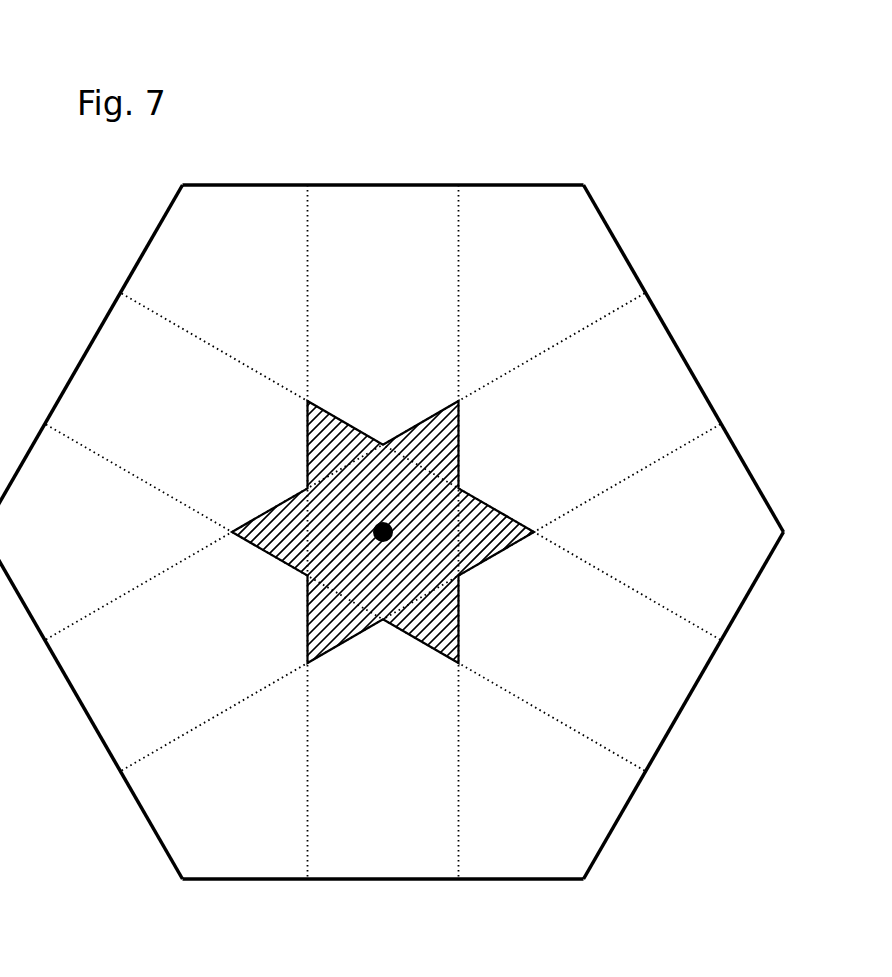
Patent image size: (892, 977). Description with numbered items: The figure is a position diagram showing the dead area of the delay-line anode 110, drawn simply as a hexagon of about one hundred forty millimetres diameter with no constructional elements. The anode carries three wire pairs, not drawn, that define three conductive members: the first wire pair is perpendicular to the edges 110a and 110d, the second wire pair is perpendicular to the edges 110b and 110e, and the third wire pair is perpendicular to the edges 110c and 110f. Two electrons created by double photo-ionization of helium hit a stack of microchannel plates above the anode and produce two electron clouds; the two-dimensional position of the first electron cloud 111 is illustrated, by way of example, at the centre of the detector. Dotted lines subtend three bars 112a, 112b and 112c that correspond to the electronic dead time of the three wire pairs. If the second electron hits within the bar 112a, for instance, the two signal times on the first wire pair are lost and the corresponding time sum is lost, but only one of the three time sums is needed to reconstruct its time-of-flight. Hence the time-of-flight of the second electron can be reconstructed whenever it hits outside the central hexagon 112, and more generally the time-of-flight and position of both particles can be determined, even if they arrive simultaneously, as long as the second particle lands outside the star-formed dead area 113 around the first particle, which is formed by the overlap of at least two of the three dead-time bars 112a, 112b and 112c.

The delay-line anode 110 is at (422, 153).
The edge 110a is at (742, 458).
The edge 110b is at (618, 823).
The edge 110c is at (545, 883).
The edge 110d is at (148, 822).
The edge 110e is at (130, 268).
The edge 110f is at (285, 185).
The first electron cloud 111 is at (385, 522).
The hexagon 112 is at (367, 490).
The dead-time bar 112a is at (632, 380).
The dead-time bar 112b is at (625, 674).
The dead-time bar 112c is at (401, 765).
The star-formed dead area 113 is at (340, 405).